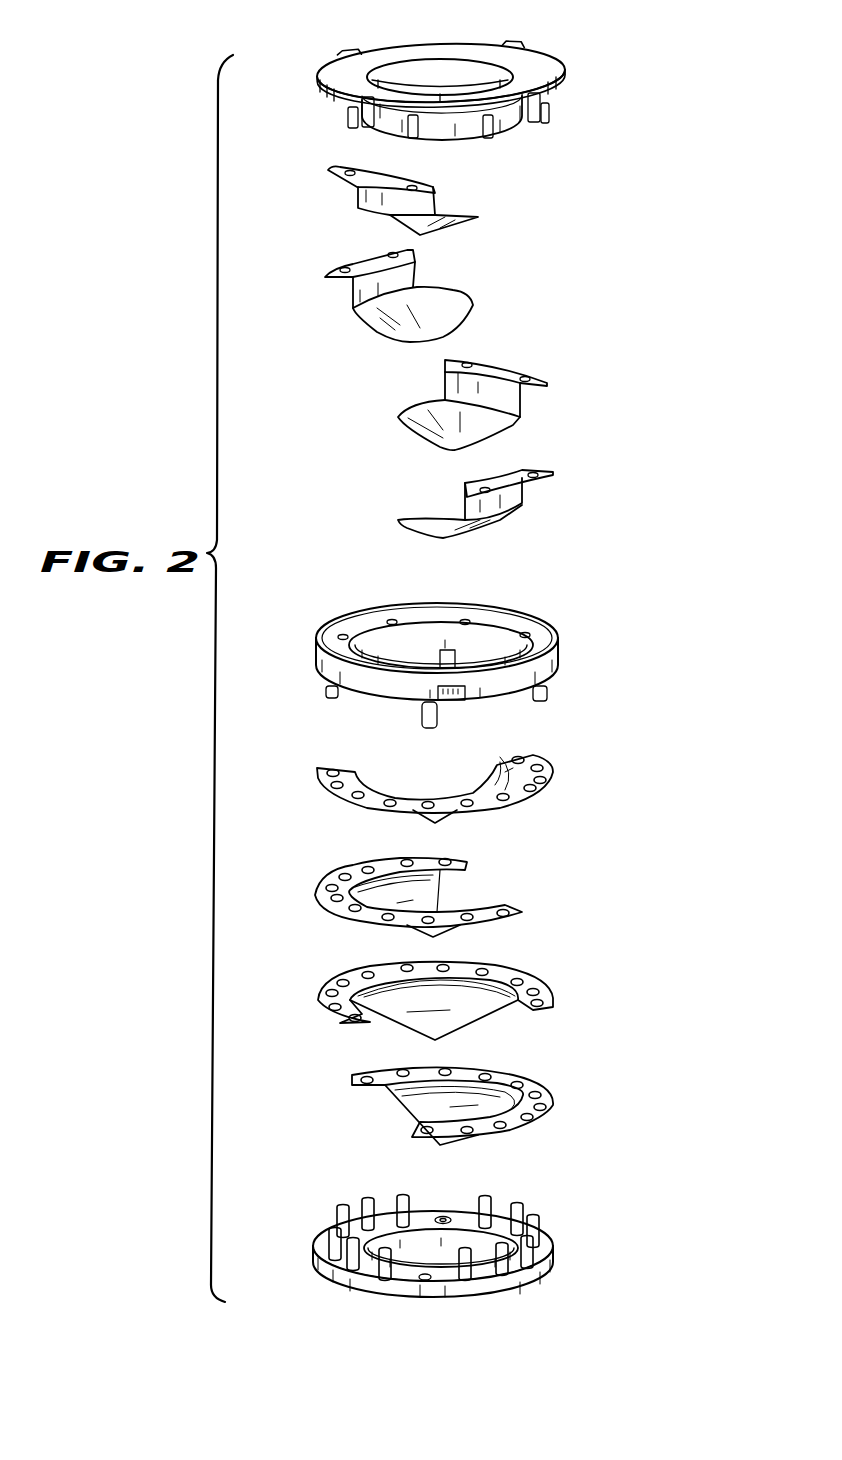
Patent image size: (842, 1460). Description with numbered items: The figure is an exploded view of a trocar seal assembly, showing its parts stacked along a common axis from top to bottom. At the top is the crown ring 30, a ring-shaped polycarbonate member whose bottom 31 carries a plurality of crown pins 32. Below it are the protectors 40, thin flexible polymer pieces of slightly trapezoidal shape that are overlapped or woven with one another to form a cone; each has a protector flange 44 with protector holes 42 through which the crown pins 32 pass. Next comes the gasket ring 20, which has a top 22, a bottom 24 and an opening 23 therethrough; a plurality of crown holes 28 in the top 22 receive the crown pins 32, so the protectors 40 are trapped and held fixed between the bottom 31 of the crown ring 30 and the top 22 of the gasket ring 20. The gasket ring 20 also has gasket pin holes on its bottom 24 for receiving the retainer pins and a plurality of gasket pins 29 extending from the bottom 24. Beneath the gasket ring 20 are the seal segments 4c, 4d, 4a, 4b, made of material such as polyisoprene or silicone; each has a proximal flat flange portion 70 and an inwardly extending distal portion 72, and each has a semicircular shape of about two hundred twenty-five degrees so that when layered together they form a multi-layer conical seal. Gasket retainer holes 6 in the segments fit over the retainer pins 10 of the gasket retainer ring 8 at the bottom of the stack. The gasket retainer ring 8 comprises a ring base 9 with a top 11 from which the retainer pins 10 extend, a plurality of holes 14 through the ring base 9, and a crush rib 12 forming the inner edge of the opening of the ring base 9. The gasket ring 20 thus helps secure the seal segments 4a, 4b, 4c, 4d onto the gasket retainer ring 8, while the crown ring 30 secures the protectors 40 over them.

The crown ring 30 is at (552, 51).
The bottom of crown ring 31 is at (328, 105).
The crown pins 32 is at (540, 122).
The protectors 40 is at (560, 535).
The protector holes 42 is at (393, 253).
The protector flange 44 is at (345, 271).
The gasket ring 20 is at (556, 622).
The top of gasket ring 22 is at (358, 618).
The opening of gasket ring 23 is at (485, 640).
The crown holes 28 is at (465, 619).
The gasket pins 29 is at (547, 692).
The bottom of gasket ring 24 is at (510, 700).
The proximal flat flange portion 70 is at (322, 782).
The seal segment 4c is at (550, 790).
The seal segment 4d is at (355, 868).
The inwardly extending distal portion 72 is at (443, 888).
The gasket retainer holes 6 is at (515, 908).
The seal segment 4a is at (530, 985).
The seal segment 4b is at (548, 1097).
The gasket retainer ring 8 is at (321, 1231).
The ring base 9 is at (515, 1282).
The retainer pins 10 is at (545, 1232).
The top of ring base 11 is at (403, 1277).
The crush rib 12 is at (447, 1226).
The holes 14 is at (447, 1216).